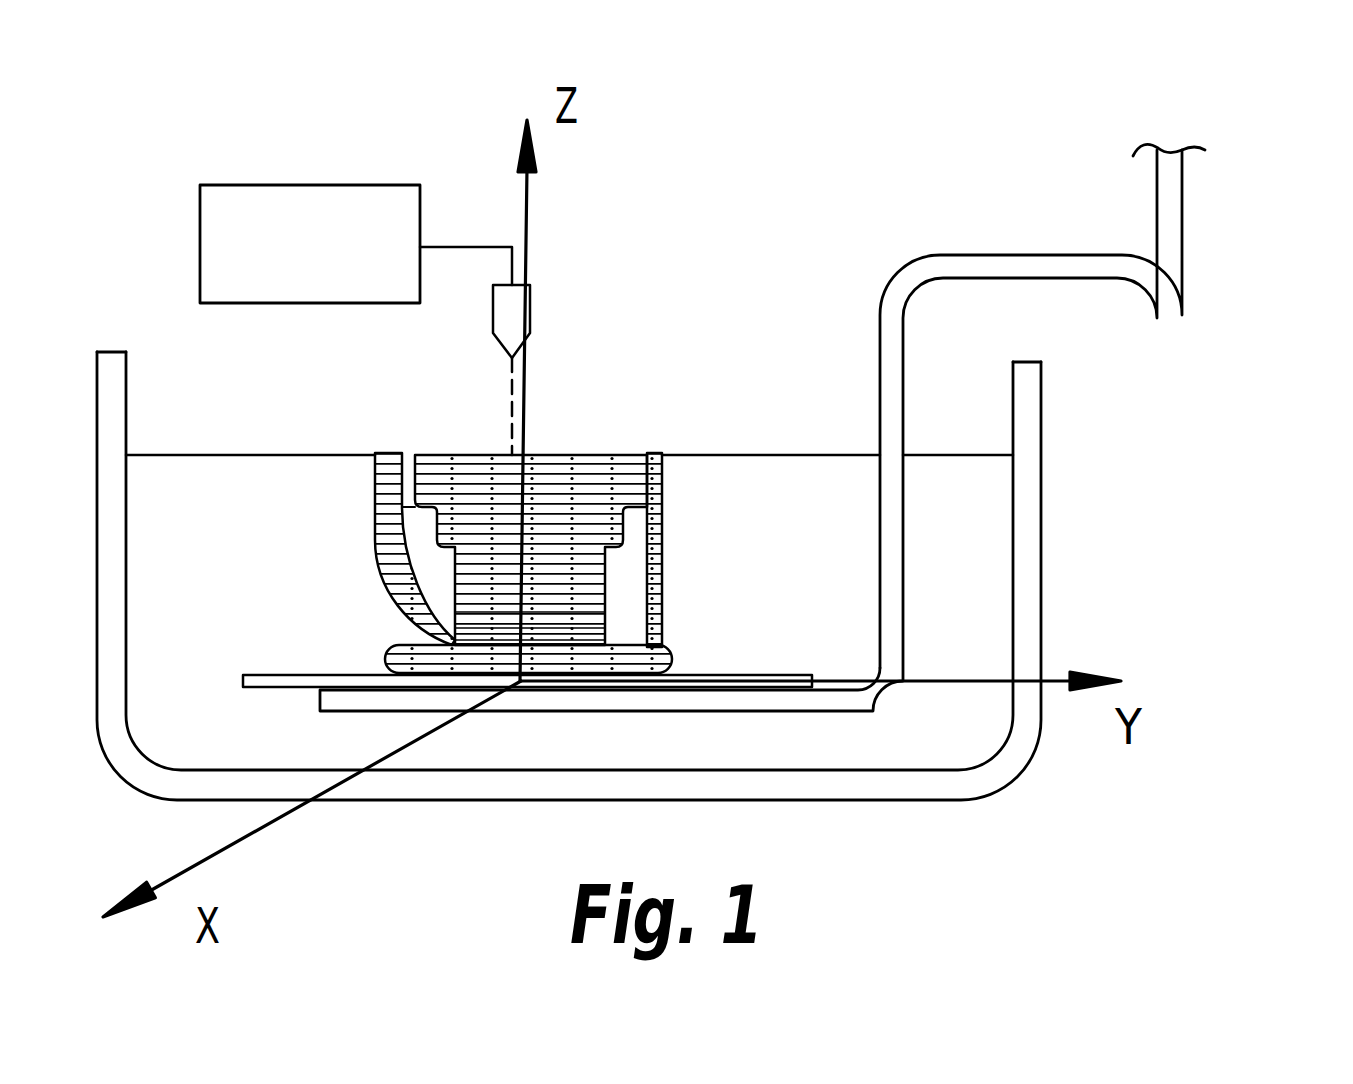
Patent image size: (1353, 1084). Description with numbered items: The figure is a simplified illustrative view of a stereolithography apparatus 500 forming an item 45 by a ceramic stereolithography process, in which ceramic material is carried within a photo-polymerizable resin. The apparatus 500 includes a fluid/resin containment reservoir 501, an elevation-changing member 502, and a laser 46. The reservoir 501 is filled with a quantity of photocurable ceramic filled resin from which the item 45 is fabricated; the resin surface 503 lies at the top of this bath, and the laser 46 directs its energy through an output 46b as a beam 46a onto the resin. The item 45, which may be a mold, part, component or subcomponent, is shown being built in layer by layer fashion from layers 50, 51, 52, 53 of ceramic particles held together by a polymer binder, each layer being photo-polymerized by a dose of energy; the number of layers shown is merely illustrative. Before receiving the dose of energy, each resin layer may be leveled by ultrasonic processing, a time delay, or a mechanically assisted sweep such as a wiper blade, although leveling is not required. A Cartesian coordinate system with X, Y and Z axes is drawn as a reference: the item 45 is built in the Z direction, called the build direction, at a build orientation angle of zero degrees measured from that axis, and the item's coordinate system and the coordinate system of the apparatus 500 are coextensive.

The laser 46 is at (304, 245).
The laser beam 46a is at (505, 415).
The scanning head 46b is at (512, 313).
The item 45 is at (463, 495).
The layer 50 is at (607, 613).
The layer 51 is at (607, 630).
The layer 52 is at (607, 638).
The layer 53 is at (607, 600).
The stereolithography apparatus 500 is at (1106, 504).
The fluid/resin containment reservoir 501 is at (962, 605).
The elevation-changing member 502 is at (1170, 215).
The resin surface 503 is at (690, 455).